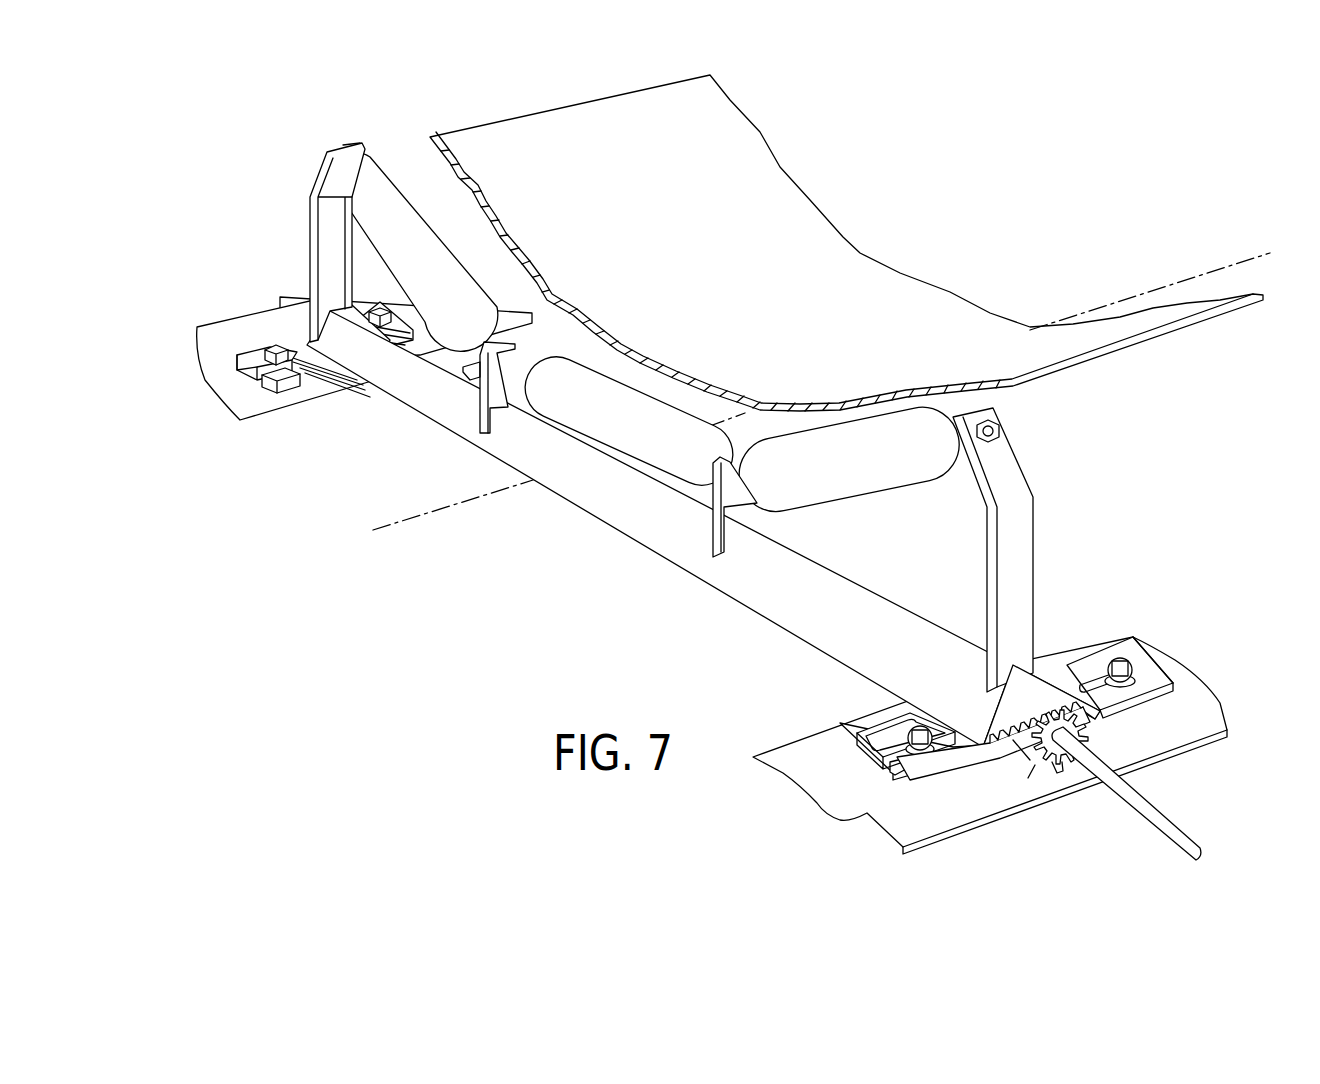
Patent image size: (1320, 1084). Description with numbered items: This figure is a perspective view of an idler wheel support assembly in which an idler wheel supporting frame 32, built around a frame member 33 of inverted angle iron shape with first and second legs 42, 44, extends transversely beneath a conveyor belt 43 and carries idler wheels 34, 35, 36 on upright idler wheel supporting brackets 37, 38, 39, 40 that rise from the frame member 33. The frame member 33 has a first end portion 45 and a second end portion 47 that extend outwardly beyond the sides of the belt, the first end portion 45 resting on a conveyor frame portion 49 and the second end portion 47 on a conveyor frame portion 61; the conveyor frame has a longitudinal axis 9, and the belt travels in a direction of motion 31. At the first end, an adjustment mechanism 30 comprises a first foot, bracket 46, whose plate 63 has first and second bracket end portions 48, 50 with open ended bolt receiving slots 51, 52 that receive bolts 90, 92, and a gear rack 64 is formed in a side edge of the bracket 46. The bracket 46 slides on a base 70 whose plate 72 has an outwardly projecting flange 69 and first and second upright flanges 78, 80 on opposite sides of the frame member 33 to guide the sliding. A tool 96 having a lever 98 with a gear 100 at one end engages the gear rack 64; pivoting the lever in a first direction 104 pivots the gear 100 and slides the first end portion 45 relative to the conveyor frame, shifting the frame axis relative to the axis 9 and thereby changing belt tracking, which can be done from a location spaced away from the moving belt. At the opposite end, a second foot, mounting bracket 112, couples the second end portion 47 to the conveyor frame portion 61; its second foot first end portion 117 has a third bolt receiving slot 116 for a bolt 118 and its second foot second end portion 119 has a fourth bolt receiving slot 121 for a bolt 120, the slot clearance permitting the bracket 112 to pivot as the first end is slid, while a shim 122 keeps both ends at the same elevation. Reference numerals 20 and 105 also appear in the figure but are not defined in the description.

The longitudinal axis of the conveyor frame 9 is at (470, 555).
The mounting assembly 20 is at (1140, 700).
The adjustment mechanism 30 is at (1097, 633).
The direction of motion of the conveyor belt 31 is at (873, 247).
The idler wheel supporting frame 32 is at (847, 577).
The frame member 33 is at (600, 507).
The idler wheel 34 is at (912, 460).
The idler wheel 35 is at (630, 410).
The idler wheel 36 is at (383, 187).
The upright idler wheel supporting bracket 37 is at (1015, 539).
The upright idler wheel supporting bracket 38 is at (697, 527).
The upright idler wheel supporting bracket 39 is at (483, 392).
The upright idler wheel supporting bracket 40 is at (327, 220).
The first leg 42 is at (1047, 670).
The conveyor belt 43 is at (889, 298).
The second leg 44 is at (647, 523).
The first end portion 45 is at (980, 637).
The bracket 46 is at (1080, 680).
The second end portion 47 is at (362, 405).
The first bracket end portion 48 is at (1150, 683).
The conveyor frame portion 49 is at (865, 815).
The second bracket end portion 50 is at (893, 774).
The bolt receiving slot 51 is at (1138, 672).
The bolt receiving slot 52 is at (888, 764).
The conveyor frame portion 61 is at (267, 397).
The plate 63 is at (1100, 724).
The gear rack 64 is at (1013, 740).
The outwardly projecting flange 69 is at (1040, 762).
The base 70 is at (943, 770).
The plate 72 is at (957, 767).
The upright flange 78 is at (1078, 673).
The upright flange 80 is at (887, 718).
The bolt 90 is at (1128, 655).
The bolt 92 is at (920, 728).
The tool 96 is at (1183, 850).
The lever 98 is at (1167, 837).
The gear 100 is at (1058, 772).
The first direction 104 is at (1107, 837).
The lateral adjustment direction 105 is at (933, 593).
The mounting bracket 112 is at (252, 345).
The third bolt receiving slot 116 is at (407, 320).
The second foot first end portion 117 is at (497, 300).
The bolt 118 is at (380, 312).
The second foot second end portion 119 is at (293, 367).
The bolt 120 is at (270, 347).
The fourth bolt receiving slot 121 is at (252, 386).
The shim 122 is at (268, 388).